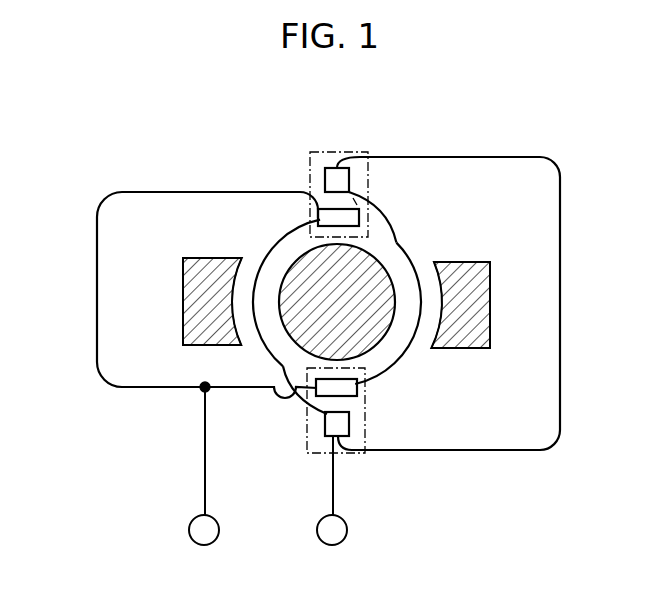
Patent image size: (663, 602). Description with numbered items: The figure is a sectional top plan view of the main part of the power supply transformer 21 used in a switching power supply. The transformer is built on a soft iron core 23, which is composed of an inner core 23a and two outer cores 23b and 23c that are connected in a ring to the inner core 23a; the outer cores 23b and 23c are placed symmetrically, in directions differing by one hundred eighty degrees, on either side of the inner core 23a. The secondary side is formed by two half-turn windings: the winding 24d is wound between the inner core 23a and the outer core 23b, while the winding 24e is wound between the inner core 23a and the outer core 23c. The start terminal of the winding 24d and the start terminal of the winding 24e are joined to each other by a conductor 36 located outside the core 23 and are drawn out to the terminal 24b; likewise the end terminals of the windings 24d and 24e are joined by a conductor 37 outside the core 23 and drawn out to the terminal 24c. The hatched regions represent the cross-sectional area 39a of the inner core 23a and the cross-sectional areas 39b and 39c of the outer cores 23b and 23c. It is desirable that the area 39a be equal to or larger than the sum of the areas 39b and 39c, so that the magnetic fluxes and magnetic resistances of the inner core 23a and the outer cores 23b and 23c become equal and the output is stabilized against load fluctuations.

The power supply transformer 21 is at (398, 155).
The core 23 is at (268, 398).
The inner core 23a is at (293, 280).
The outer core 23b is at (183, 332).
The outer core 23c is at (484, 328).
The terminal 24b is at (347, 531).
The terminal 24c is at (189, 531).
The 0.5-turn winding 24d is at (262, 346).
The 0.5-turn winding 24e is at (408, 258).
The conductor 36 is at (560, 245).
The conductor 37 is at (97, 240).
The cross-sectional area of the inner core 39a is at (390, 343).
The cross-sectional area of the outer core 39b is at (183, 278).
The cross-sectional area of the outer core 39c is at (483, 290).